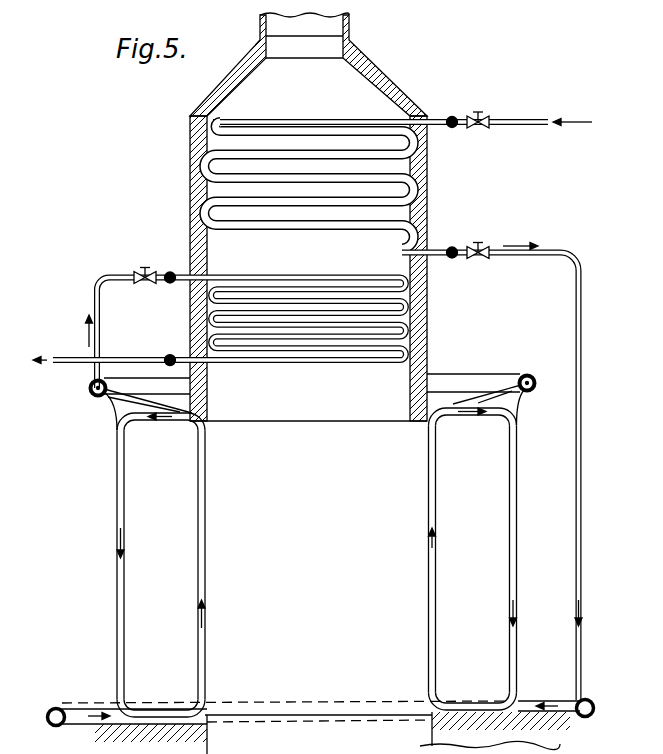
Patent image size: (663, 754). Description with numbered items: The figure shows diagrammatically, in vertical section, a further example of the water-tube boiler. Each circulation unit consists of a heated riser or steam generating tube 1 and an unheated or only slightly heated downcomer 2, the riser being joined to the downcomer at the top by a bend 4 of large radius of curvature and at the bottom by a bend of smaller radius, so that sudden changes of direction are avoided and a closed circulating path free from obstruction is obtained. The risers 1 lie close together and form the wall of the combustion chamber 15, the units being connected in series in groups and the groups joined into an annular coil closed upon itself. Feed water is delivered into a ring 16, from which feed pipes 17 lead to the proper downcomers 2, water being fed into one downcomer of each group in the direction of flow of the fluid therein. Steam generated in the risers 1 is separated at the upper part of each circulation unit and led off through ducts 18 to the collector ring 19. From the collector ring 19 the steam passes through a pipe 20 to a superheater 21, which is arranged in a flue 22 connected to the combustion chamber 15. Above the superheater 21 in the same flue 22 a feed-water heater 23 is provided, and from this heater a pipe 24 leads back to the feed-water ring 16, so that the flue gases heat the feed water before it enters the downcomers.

The riser 1 is at (207, 557).
The downcomer 2 is at (116, 593).
The tube top bend 4 is at (140, 416).
The combustion chamber 15 is at (292, 628).
The ring 16 is at (57, 707).
The feed pipe 17 is at (97, 724).
The duct 18 is at (137, 397).
The collector ring 19 is at (91, 394).
The pipe 20 is at (95, 301).
The superheater 21 is at (415, 334).
The flue 22 is at (402, 383).
The feed-water heater 23 is at (428, 182).
The pipe 24 is at (582, 508).